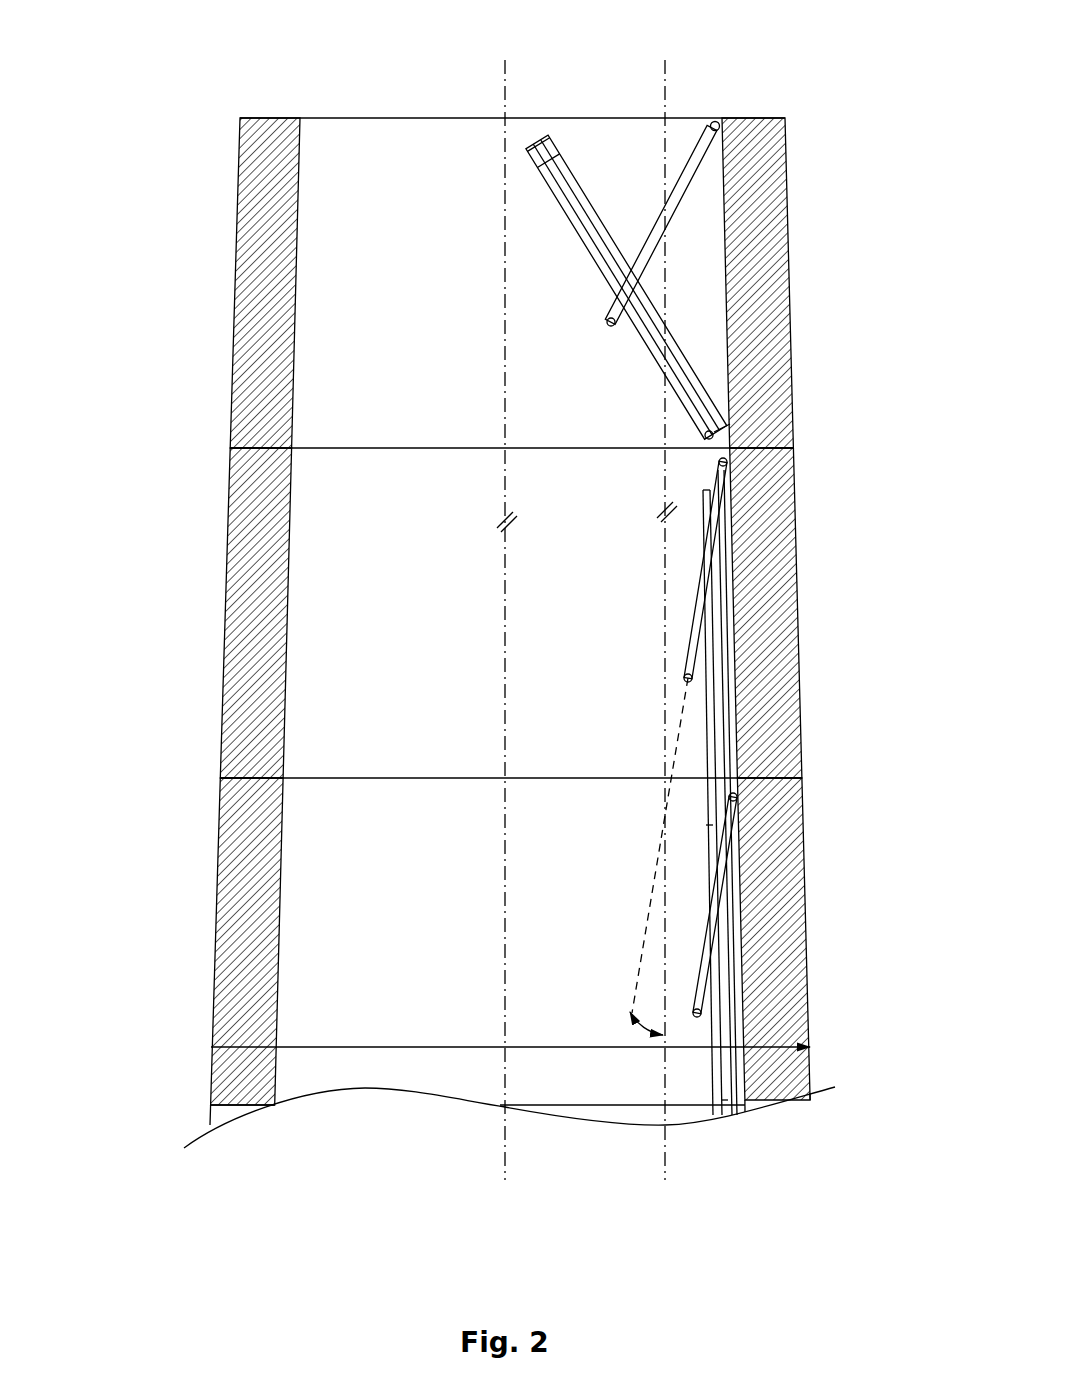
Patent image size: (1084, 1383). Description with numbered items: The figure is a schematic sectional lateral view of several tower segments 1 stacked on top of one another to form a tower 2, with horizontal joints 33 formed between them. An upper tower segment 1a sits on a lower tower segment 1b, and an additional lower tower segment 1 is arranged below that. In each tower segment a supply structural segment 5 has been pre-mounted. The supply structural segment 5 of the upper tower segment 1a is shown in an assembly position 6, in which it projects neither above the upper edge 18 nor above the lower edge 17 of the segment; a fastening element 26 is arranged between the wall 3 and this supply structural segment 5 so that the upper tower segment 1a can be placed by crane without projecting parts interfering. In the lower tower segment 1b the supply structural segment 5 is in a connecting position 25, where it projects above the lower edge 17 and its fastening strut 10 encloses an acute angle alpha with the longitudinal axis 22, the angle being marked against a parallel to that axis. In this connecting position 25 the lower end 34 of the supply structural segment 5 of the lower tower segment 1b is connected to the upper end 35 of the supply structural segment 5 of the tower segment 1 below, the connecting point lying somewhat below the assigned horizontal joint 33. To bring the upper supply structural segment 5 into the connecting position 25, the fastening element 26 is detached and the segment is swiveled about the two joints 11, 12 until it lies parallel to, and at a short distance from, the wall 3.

The tower segment 1 is at (210, 895).
The upper tower segment 1a is at (236, 240).
The lower tower segment 1b is at (225, 588).
The tower 2 is at (210, 103).
The wall 3 is at (762, 218).
The supply structural segment 5 is at (578, 268).
The assembly position 6 is at (622, 148).
The fastening strut 10 is at (675, 195).
The joint 11 is at (612, 325).
The joint 12 is at (713, 125).
The lower edge 17 is at (345, 448).
The upper edge 18 is at (350, 118).
The longitudinal axis 22 is at (505, 100).
The connecting position 25 is at (677, 690).
The fastening element 26 is at (713, 435).
The horizontal joint 33 is at (237, 448).
The lower end 34 is at (727, 418).
The upper end 35 is at (548, 145).